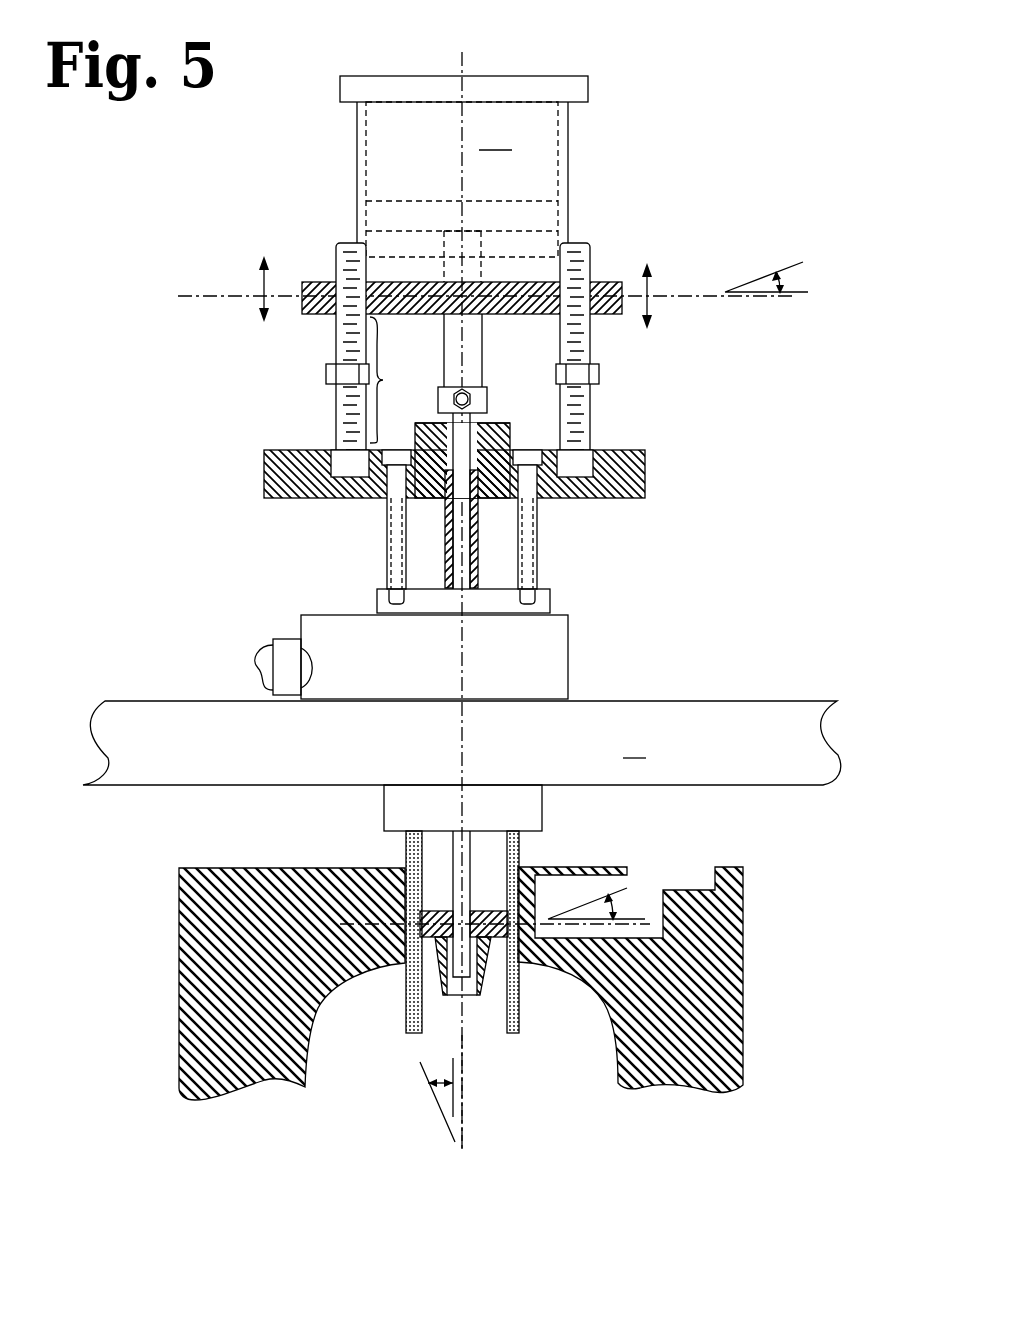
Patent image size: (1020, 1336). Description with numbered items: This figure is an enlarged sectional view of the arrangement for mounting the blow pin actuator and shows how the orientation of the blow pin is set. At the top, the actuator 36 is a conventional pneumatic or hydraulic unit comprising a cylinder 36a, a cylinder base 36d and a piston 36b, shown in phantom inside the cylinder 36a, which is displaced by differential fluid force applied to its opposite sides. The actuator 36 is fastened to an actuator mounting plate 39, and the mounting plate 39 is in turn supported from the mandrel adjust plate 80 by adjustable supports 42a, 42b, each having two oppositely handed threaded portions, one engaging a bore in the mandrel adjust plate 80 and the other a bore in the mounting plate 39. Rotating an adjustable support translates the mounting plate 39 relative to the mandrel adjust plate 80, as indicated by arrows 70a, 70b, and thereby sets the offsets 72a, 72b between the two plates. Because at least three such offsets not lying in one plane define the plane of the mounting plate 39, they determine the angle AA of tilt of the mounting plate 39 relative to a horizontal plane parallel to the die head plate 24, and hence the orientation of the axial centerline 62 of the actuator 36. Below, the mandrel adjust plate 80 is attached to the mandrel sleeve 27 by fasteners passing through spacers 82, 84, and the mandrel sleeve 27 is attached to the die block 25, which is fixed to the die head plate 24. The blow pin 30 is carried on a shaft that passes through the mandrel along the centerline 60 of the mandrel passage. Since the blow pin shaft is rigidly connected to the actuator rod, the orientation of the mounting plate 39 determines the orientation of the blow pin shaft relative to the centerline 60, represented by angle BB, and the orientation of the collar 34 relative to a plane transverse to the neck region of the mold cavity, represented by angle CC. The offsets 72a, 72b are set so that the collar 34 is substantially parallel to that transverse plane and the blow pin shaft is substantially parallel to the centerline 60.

The axial centerline of actuator 62 is at (466, 72).
The actuator 36 is at (506, 175).
The cylinder 36a is at (462, 179).
The piston 36b is at (525, 215).
The cylinder base 36d is at (540, 250).
The actuator mounting plate 39 is at (600, 285).
The adjustable support 42a is at (340, 350).
The adjustable support 42b is at (580, 352).
The arrow 70a is at (648, 282).
The arrow 70b is at (262, 270).
The offset 72a is at (383, 380).
The offset 72b is at (483, 383).
The angle of tilt of mounting plate AA is at (783, 282).
The mandrel adjust plate 80 is at (640, 450).
The spacer 82 is at (528, 556).
The spacer 84 is at (396, 556).
The mandrel sleeve 27 is at (542, 601).
The die block 25 is at (548, 643).
The die head plate 24 is at (462, 743).
The blow pin 30 is at (424, 972).
The collar 34 is at (519, 978).
The centerline 60 is at (462, 1036).
The angle BB is at (430, 1068).
The angle CC is at (622, 906).